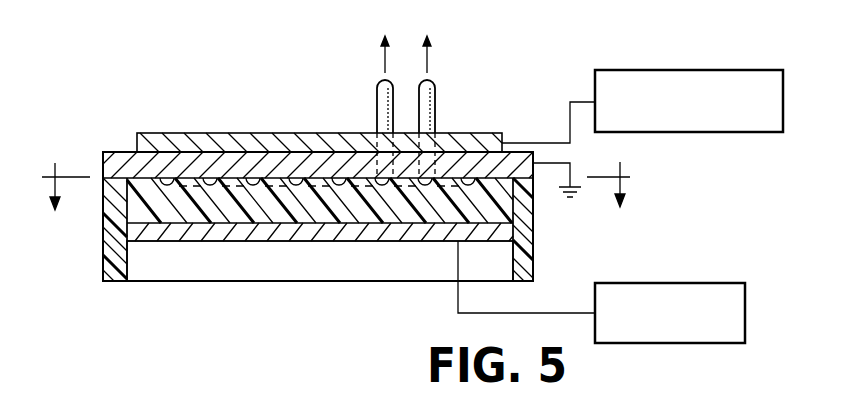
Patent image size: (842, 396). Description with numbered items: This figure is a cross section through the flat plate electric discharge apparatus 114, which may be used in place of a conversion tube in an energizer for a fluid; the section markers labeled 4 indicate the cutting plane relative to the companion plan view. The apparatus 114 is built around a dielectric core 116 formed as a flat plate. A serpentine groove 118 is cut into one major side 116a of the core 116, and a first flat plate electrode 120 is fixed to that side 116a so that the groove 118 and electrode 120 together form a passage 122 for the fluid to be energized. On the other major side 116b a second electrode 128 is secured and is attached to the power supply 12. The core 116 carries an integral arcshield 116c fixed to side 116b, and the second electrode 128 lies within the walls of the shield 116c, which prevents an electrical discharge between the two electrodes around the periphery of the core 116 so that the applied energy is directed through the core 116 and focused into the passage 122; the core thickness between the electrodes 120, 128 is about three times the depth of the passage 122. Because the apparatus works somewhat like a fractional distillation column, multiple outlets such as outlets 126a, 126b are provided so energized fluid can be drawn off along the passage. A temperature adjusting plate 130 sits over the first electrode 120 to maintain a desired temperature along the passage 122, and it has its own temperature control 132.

The section line 4- 4 is at (338, 182).
The power supply means 12 is at (645, 283).
The flat plate electric discharge apparatus 114 is at (78, 276).
The dielectric core 116 is at (102, 212).
The major side 116a is at (323, 177).
The other major side 116b is at (403, 232).
The arcshield 116c is at (240, 281).
The serpentine groove 118 is at (217, 177).
The first flat plate electrode 120 is at (120, 152).
The passage 122 is at (166, 176).
The outlet 126a is at (376, 108).
The outlet 126b is at (493, 71).
The second electrode 128 is at (362, 242).
The temperature adjusting plate 130 is at (233, 133).
The temperature control 132 is at (660, 70).